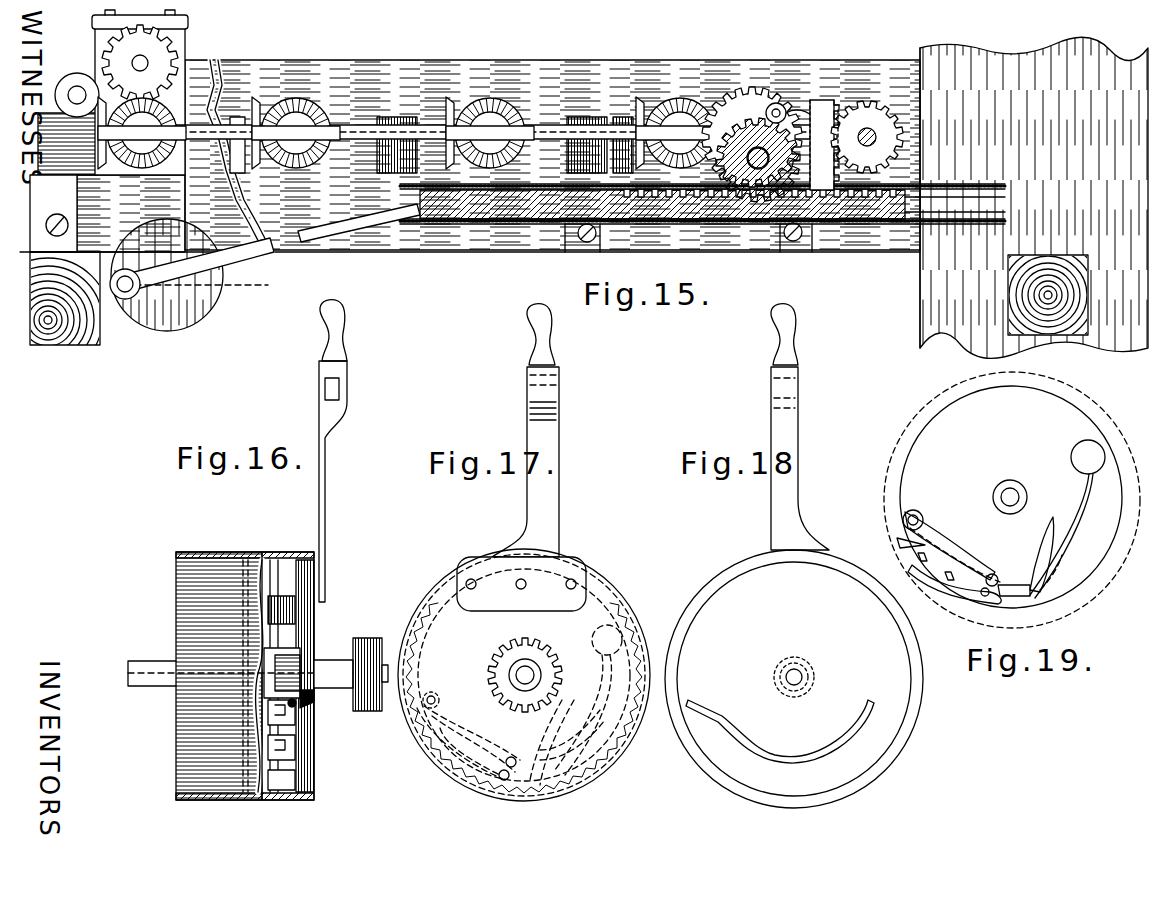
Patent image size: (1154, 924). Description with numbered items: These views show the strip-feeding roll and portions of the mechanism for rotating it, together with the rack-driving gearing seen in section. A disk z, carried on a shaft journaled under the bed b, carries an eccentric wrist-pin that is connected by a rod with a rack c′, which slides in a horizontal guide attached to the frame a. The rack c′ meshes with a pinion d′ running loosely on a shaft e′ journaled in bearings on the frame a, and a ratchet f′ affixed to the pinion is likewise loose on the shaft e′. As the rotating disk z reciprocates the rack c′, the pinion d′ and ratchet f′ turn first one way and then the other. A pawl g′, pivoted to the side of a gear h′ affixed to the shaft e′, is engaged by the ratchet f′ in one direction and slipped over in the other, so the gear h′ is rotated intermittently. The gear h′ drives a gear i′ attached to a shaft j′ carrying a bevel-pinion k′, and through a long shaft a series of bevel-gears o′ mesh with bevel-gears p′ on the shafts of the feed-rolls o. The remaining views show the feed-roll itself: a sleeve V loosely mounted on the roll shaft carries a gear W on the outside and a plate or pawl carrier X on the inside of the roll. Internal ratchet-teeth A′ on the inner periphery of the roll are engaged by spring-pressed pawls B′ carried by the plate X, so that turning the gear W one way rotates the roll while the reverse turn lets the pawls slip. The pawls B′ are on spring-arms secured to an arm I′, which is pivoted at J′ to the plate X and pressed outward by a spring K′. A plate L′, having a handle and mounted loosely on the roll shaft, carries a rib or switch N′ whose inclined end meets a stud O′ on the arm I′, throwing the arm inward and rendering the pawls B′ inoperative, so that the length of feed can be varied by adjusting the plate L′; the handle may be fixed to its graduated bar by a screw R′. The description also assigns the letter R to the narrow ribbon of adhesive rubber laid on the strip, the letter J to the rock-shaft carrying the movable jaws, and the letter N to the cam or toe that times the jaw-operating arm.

In FIG. 15, the frame a is at (560, 100).
In FIG. 15, the bevel-gears o′ is at (105, 172).
In FIG. 15, the bevel-gears p′ is at (165, 170).
In FIG. 15, the rack c′ is at (552, 224).
In FIG. 15, the shaft e′ is at (722, 222).
In FIG. 15, the pinion d′ is at (752, 218).
In FIG. 15, the ratchet f′ is at (760, 100).
In FIG. 15, the gear h′ is at (790, 100).
In FIG. 15, the pawl g′ is at (825, 100).
In FIG. 15, the bevel-pinion k′ is at (900, 140).
In FIG. 15, the gear i′ is at (888, 131).
In FIG. 15, the shaft j′ is at (875, 140).
In FIG. 15, the bed b is at (250, 256).
In FIG. 15, the disk z is at (172, 318).
In FIG. 16, the screw R′ is at (345, 322).
In FIG. 18, the screw R′ is at (798, 332).
In FIG. 16, the plate L′ is at (325, 480).
In FIG. 17, the plate L′ is at (560, 520).
In FIG. 18, the plate L′ is at (800, 515).
In FIG. 16, the plate or pawl carrier X is at (268, 560).
In FIG. 19, the plate or pawl carrier X is at (1010, 484).
In FIG. 16, the internal ratchet-teeth A′ is at (306, 580).
In FIG. 17, the internal ratchet-teeth A′ is at (475, 786).
In FIG. 16, the spring K′ is at (300, 640).
In FIG. 17, the spring K′ is at (600, 655).
In FIG. 19, the spring K′ is at (1088, 490).
In FIG. 16, the gear W is at (368, 640).
In FIG. 17, the gear W is at (541, 643).
In FIG. 16, the sleeve V is at (330, 660).
In FIG. 16, the cam or toe N is at (312, 700).
In FIG. 17, the cam or toe N is at (570, 747).
In FIG. 16, the stud O′ is at (296, 706).
In FIG. 17, the stud O′ is at (438, 696).
In FIG. 19, the stud O′ is at (930, 522).
In FIG. 16, the pawls B′ is at (297, 748).
In FIG. 17, the pawls B′ is at (455, 730).
In FIG. 19, the pawls B′ is at (950, 562).
In FIG. 17, the ribbon R is at (556, 330).
In FIG. 17, the feed-rolls o is at (452, 580).
In FIG. 17, the arm I′ is at (552, 737).
In FIG. 19, the arm I′ is at (1040, 555).
In FIG. 17, the rock-shaft J is at (510, 757).
In FIG. 18, the rib or switch N′ is at (800, 758).
In FIG. 19, the pivot J′ is at (997, 576).